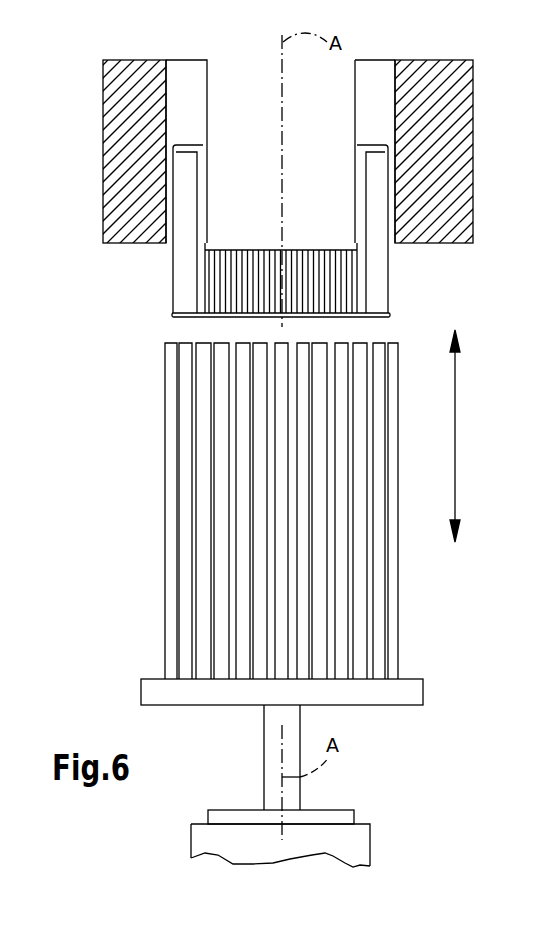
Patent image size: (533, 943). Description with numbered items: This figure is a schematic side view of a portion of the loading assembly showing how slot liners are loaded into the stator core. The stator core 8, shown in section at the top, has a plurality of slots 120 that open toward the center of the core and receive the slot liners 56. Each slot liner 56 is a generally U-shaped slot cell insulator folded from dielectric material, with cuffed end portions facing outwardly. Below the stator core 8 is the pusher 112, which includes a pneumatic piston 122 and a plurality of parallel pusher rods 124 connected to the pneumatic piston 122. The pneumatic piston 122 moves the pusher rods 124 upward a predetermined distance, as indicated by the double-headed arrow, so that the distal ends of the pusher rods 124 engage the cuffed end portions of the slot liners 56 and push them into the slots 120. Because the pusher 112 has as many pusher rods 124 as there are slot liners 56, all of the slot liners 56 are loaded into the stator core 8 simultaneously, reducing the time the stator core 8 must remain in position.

The stator core 8 is at (489, 173).
The slot liner 56 is at (410, 295).
The pusher 112 is at (141, 399).
The slots 120 is at (184, 80).
The pneumatic piston 122 is at (353, 843).
The pusher rods 124 is at (412, 612).